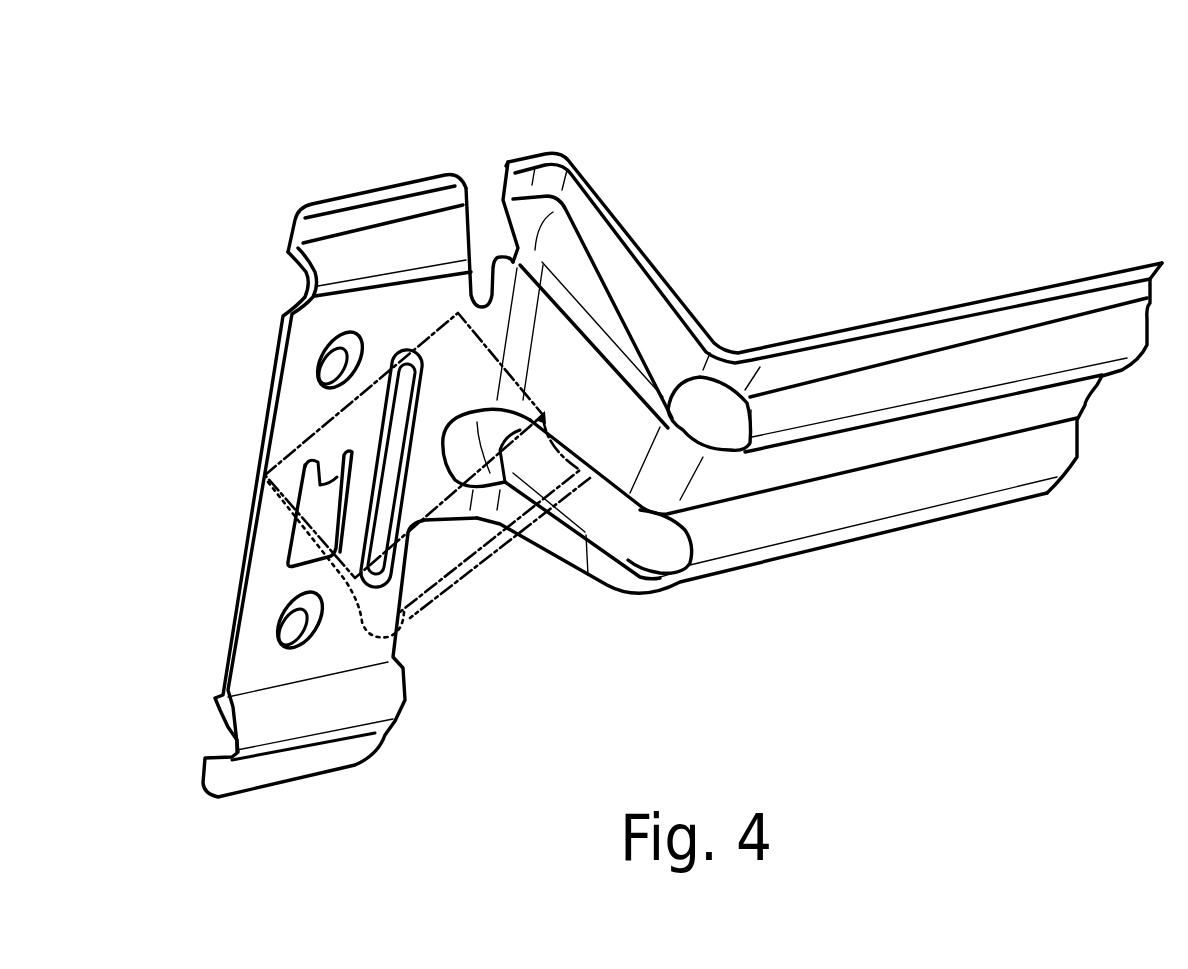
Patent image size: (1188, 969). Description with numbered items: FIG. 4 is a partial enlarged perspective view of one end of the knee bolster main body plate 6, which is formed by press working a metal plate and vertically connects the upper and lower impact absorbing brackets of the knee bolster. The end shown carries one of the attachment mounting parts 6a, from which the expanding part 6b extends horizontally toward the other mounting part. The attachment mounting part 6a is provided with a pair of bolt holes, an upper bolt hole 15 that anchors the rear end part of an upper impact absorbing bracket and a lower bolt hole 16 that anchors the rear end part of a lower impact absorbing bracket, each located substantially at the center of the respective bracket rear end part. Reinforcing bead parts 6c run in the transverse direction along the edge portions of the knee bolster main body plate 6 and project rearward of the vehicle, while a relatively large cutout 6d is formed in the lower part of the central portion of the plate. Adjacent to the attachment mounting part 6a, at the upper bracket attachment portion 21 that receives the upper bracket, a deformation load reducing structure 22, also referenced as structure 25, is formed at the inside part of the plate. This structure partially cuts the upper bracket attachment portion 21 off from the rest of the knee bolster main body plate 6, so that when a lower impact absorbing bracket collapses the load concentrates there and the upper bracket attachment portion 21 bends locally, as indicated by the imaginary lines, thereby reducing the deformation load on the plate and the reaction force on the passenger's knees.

The knee bolster main body plate 6 is at (883, 316).
The attachment mounting part 6a is at (260, 549).
The expanding part 6b is at (1006, 300).
The reinforcing bead part 6c is at (993, 380).
The cutout 6d is at (623, 585).
The bolt hole 15 is at (338, 342).
The bolt hole 16 is at (288, 609).
The upper bracket attachment portion 21 is at (288, 418).
The deformation load reducing structure 22 is at (459, 185).
The cutout 25 is at (483, 186).